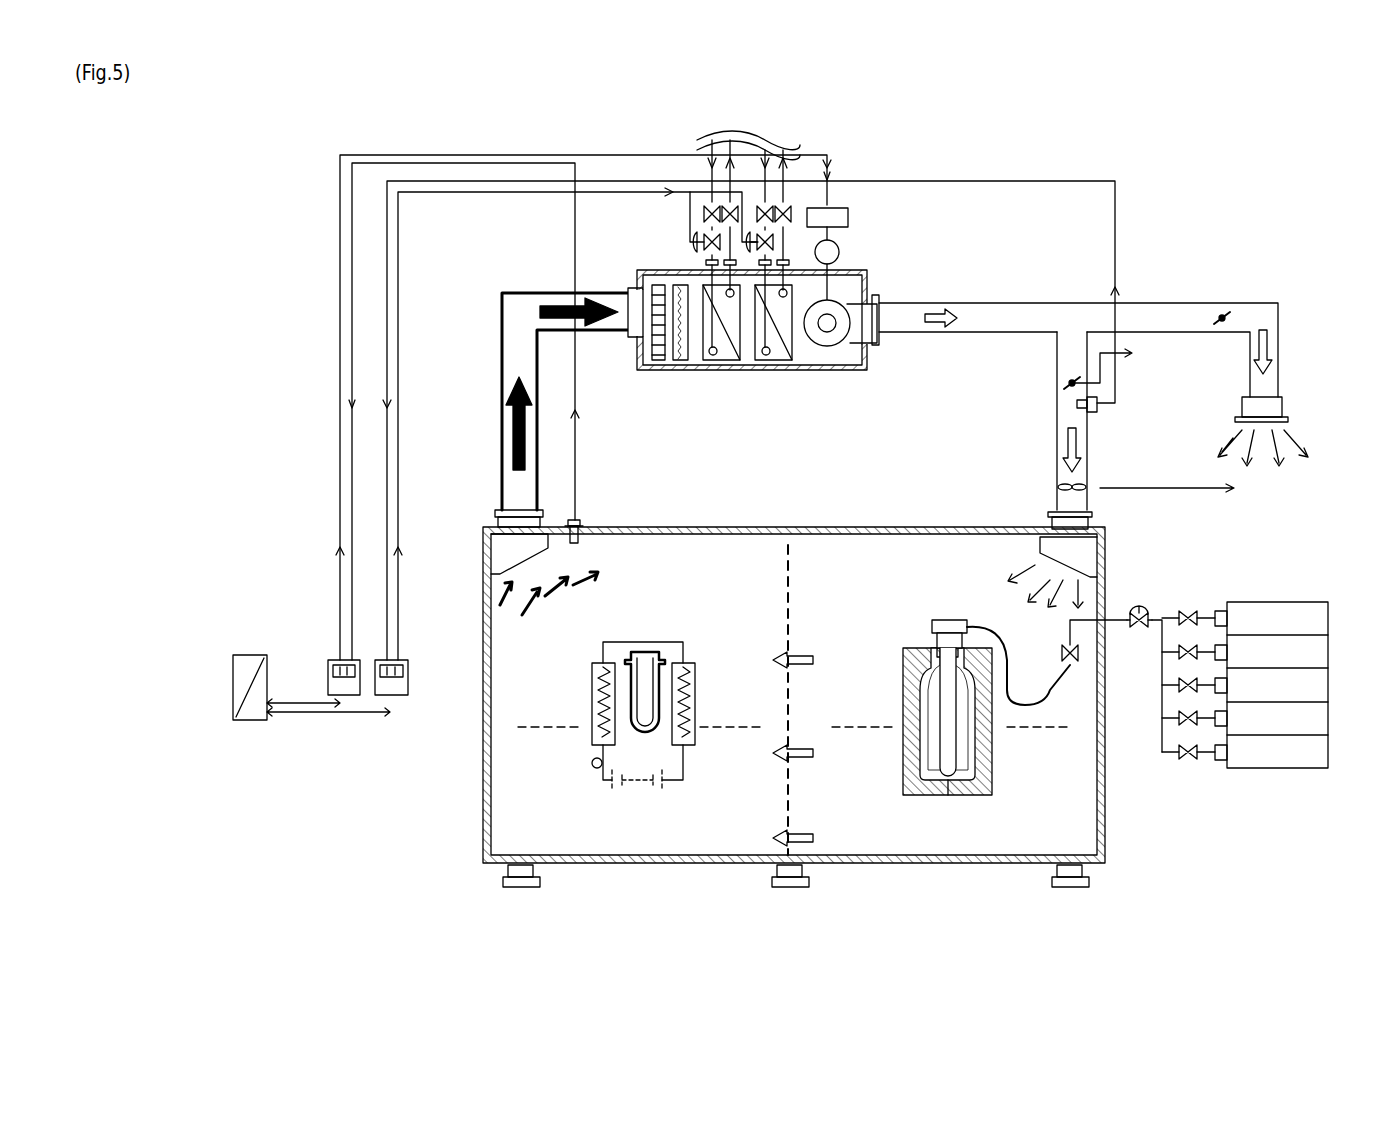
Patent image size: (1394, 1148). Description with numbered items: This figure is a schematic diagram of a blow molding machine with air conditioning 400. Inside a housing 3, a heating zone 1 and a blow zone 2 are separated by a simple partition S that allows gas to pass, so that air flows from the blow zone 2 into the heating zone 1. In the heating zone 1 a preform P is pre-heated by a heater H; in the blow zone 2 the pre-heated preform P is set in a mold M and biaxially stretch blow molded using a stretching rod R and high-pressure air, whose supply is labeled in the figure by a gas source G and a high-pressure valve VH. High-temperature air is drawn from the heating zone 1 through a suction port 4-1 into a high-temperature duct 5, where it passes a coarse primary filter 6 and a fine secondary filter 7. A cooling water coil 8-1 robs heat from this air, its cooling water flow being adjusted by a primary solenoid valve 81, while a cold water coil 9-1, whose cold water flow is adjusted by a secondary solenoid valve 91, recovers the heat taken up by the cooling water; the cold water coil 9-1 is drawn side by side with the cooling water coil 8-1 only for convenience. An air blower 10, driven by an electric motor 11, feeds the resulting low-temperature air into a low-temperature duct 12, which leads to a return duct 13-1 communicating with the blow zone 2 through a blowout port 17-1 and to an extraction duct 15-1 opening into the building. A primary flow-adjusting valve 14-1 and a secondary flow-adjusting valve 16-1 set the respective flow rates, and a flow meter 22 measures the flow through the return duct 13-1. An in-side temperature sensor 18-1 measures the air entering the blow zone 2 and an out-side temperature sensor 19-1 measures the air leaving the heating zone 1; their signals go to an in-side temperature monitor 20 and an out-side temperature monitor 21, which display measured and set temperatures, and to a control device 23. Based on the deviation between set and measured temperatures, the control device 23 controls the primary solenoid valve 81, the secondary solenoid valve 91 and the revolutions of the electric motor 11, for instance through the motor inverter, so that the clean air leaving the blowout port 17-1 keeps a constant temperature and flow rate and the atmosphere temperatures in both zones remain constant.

The blow molding machine with air conditioning 400 is at (1262, 147).
The heating zone 1 is at (645, 826).
The blow zone 2 is at (957, 826).
The housing 3 is at (1105, 795).
The suction port 4-1 is at (483, 524).
The high-temperature duct 5 is at (500, 352).
The primary filter 6 is at (665, 365).
The secondary filter 7 is at (683, 365).
The cooling water coil 8-1 is at (735, 370).
The cold water coil 9-1 is at (783, 370).
The air blower 10 is at (865, 276).
The electric motor 11 is at (840, 250).
The low-temperature duct 12 is at (975, 303).
The return duct 13-1 is at (1057, 343).
The primary flow-adjusting valve 14-1 is at (1066, 386).
The extraction duct 15-1 is at (1232, 268).
The secondary flow-adjusting valve 16-1 is at (1230, 312).
The blowout port 17-1 is at (1085, 553).
The in-side temperature sensor 18-1 is at (1092, 412).
The out-side temperature sensor 19-1 is at (580, 525).
The in-side temperature monitor 20 is at (393, 695).
The out-side temperature monitor 21 is at (347, 695).
The flow meter 22 is at (1058, 488).
The control device 23 is at (253, 655).
The primary solenoid valve 81 is at (697, 240).
The secondary solenoid valve 91 is at (750, 240).
The preform P is at (648, 652).
The heater H is at (700, 695).
The simple partition S is at (787, 767).
The stretching rod R is at (935, 655).
The mold M is at (905, 700).
The high-pressure valve VH is at (1068, 665).
The gas source G is at (1283, 596).